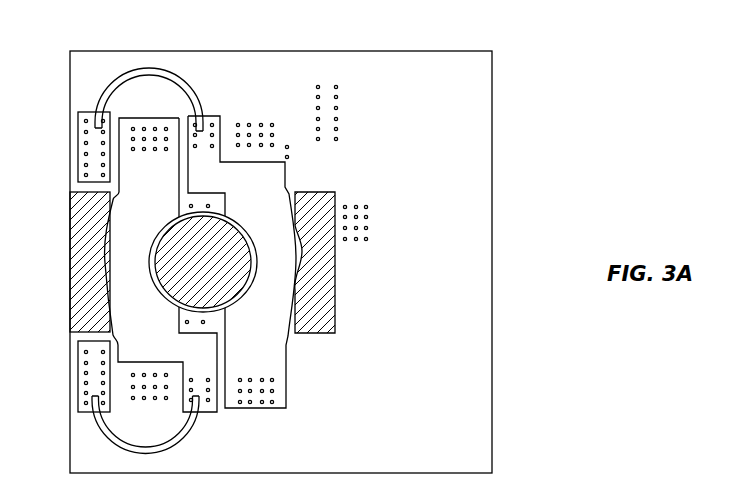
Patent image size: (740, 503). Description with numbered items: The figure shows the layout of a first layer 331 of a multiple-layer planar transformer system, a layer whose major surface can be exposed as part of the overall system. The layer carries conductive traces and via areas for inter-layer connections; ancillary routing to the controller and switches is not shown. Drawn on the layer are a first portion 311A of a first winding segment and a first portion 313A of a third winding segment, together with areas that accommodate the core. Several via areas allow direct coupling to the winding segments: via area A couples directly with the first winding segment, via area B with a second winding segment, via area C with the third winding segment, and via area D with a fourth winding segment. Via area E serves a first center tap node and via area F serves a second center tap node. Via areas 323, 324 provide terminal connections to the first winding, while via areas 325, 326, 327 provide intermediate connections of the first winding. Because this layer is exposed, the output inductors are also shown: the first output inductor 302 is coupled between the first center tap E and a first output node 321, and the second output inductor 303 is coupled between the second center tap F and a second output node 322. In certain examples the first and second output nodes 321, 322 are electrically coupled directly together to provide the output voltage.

The first output inductor 302 is at (150, 66).
The second output inductor 303 is at (136, 454).
The first output node 321 is at (76, 155).
The second output node 322 is at (76, 376).
The first portion of a third winding segment 313A is at (131, 209).
The first portion of a first winding segment 311A is at (285, 358).
The via area for intermediate connections of the first winding 325 is at (202, 195).
The via area for intermediate connections of the first winding 327 is at (193, 334).
The via area for intermediate connections of the first winding 326 is at (294, 167).
The via area for terminal connections to the first winding 324 is at (346, 112).
The via area for terminal connections to the first winding 323 is at (378, 228).
The first layer 331 is at (493, 262).
The via area for coupling directly with the first winding segment A is at (255, 406).
The via area for coupling directly with the second winding segment B is at (160, 406).
The via area for coupling directly with the third winding segment C is at (134, 117).
The via area for coupling directly with the fourth winding segment D is at (254, 115).
The via area for a first center tap node E is at (207, 111).
The via area for a second center tap node F is at (205, 418).